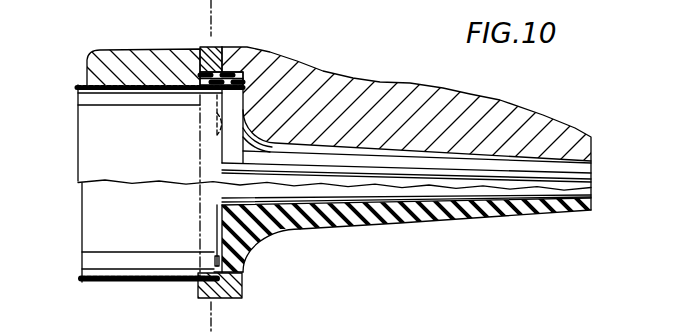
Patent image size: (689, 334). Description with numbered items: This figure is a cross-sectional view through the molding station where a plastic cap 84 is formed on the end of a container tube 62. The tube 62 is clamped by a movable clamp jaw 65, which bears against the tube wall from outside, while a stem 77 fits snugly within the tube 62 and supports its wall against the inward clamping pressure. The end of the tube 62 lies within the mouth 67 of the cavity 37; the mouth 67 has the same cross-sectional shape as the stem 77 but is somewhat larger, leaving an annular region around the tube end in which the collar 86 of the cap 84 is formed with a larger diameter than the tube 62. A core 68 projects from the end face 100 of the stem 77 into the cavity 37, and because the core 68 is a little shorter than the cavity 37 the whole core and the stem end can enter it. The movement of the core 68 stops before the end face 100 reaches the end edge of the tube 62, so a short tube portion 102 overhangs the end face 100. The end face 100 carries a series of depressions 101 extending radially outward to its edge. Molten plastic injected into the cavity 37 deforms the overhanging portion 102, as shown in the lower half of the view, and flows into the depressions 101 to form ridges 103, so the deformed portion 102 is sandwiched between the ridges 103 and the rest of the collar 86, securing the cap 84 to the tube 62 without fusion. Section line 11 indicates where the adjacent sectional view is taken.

The section line 11- 11 is at (206, 15).
The cavity 37 is at (450, 163).
The tube 62 is at (117, 283).
The movable clamp jaw 65 is at (133, 62).
The mouth of the cavity 67 is at (223, 72).
The core 68 is at (518, 178).
The stem 77 is at (160, 124).
The molded plastic cap 84 is at (432, 221).
The collar 86 is at (230, 299).
The end face of the stem 100 is at (244, 152).
The depressions 101 is at (216, 128).
The tube portion 102 is at (242, 67).
The ridges 103 is at (220, 274).